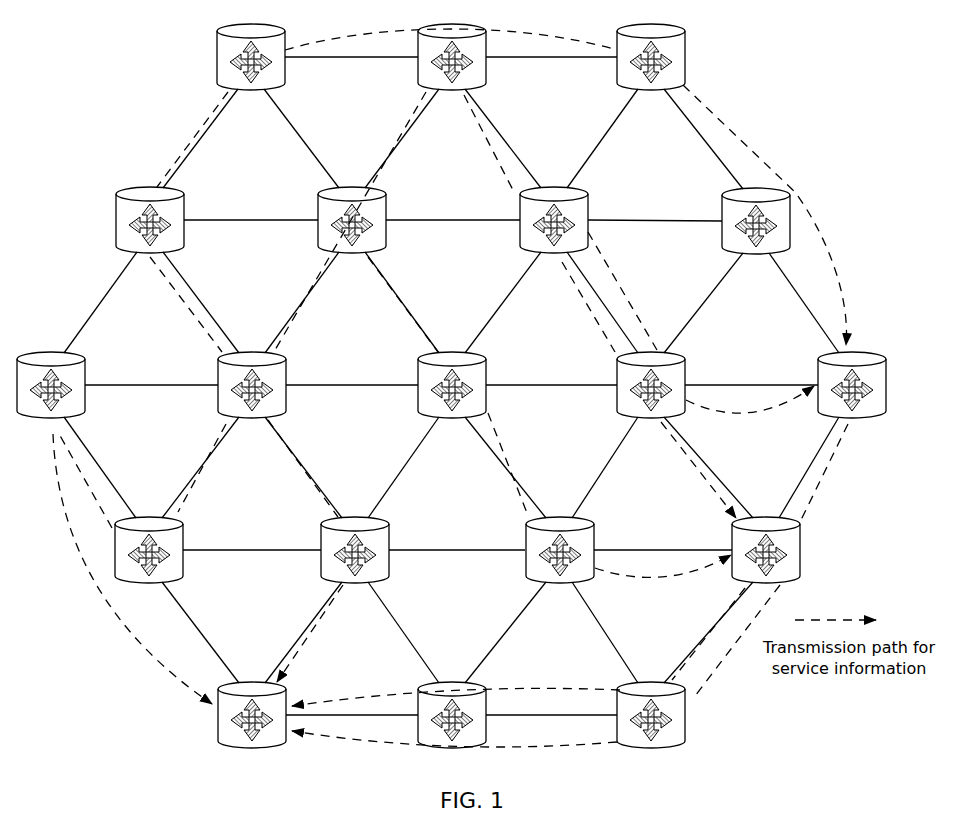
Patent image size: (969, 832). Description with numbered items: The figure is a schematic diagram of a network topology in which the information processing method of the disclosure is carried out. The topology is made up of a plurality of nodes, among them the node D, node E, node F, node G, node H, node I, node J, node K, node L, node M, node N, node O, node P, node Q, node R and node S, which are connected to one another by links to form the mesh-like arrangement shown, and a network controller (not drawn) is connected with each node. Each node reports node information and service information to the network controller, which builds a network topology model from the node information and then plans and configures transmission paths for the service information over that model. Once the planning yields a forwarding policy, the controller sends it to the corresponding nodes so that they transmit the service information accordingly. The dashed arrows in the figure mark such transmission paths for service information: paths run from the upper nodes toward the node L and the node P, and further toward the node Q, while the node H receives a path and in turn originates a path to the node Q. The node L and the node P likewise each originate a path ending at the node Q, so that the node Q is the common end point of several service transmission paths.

The node D is at (150, 207).
The node E is at (352, 207).
The node F is at (554, 199).
The node G is at (756, 209).
The node H is at (51, 372).
The node I is at (252, 372).
The node J is at (452, 372).
The node K is at (651, 372).
The node L is at (852, 376).
The node M is at (149, 537).
The node N is at (355, 537).
The node O is at (560, 537).
The node P is at (766, 537).
The node Q is at (252, 702).
The node R is at (452, 702).
The node S is at (651, 699).